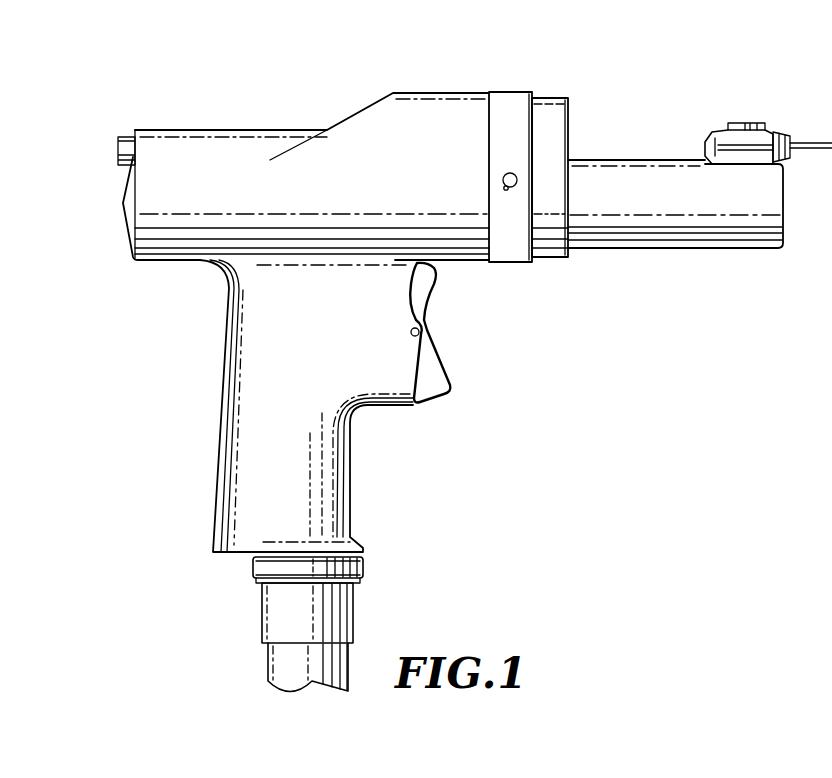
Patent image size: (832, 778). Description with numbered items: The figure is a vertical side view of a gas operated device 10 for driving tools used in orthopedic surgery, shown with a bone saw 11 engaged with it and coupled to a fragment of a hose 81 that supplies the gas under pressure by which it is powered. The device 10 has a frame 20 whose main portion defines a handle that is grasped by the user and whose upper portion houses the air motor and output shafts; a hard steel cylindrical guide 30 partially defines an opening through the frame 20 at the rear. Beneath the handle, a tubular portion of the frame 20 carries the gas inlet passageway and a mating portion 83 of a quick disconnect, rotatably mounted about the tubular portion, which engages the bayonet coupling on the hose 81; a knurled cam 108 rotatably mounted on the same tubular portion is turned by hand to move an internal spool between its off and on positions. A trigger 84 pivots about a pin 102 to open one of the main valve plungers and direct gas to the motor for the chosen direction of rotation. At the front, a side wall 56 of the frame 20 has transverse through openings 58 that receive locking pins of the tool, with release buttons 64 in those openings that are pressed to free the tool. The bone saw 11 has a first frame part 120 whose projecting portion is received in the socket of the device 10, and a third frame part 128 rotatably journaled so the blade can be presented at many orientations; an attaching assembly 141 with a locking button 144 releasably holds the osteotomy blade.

The gas operated device 10 is at (209, 124).
The cylindrical guide 30 is at (125, 136).
The side wall 56 is at (511, 92).
The first part of the bone saw frame 120 is at (561, 98).
The release buttons 64 is at (496, 176).
The through openings 58 is at (503, 189).
The bone saw 11 is at (662, 252).
The third frame part 128 is at (722, 235).
The locking button 144 is at (746, 123).
The attaching assembly 141 is at (794, 124).
The frame 20 is at (223, 393).
The pin 102 is at (428, 329).
The trigger 84 is at (438, 371).
The cam 108 is at (255, 567).
The mating portion of the quick disconnect 83 is at (261, 618).
The hose 81 is at (267, 673).